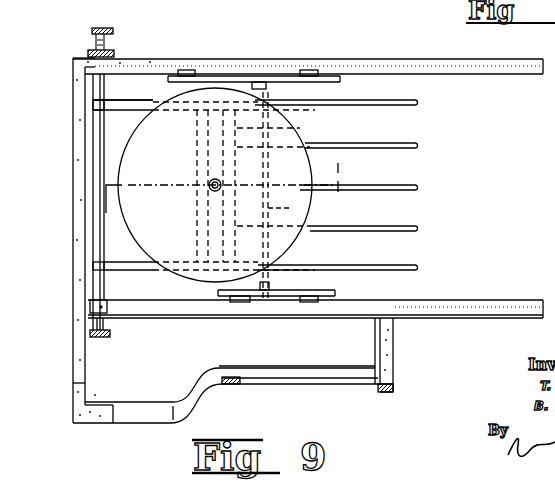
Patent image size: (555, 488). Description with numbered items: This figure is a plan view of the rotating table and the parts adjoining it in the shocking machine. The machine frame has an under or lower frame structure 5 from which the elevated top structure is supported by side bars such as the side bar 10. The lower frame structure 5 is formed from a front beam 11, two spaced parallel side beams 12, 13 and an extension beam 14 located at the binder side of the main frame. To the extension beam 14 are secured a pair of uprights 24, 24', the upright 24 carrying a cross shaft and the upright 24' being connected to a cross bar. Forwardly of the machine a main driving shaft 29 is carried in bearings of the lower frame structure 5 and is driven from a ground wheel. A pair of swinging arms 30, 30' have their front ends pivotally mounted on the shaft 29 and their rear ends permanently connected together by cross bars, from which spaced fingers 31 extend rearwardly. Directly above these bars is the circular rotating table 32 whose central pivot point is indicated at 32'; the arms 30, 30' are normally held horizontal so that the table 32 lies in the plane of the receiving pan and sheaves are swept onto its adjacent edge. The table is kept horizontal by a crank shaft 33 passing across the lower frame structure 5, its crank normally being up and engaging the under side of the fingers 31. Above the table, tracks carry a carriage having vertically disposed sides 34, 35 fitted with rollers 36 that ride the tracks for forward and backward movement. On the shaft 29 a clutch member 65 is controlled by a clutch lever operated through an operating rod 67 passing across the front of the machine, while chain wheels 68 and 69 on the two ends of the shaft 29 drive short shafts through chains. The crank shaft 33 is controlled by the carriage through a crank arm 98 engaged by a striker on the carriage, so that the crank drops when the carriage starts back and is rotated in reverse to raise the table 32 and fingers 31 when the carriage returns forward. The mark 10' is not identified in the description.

The lower frame structure 5 is at (432, 303).
The side bar 10 is at (220, 199).
The stop mark 10' is at (351, 177).
The front beam 11 is at (80, 258).
The side beam 12 is at (432, 60).
The side beam 13 is at (170, 312).
The extension beam 14 is at (318, 384).
The upright 24 is at (211, 364).
The upright 24' is at (397, 406).
The main driving shaft 29 is at (92, 184).
The swinging arm 30 is at (204, 275).
The swinging arm 30' is at (204, 154).
The spaced fingers 31 is at (418, 146).
The circular rotating table 32 is at (177, 185).
The central pivot point 32' is at (185, 177).
The crank shaft 33 is at (253, 196).
The carriage side 34 is at (232, 76).
The carriage side 35 is at (280, 297).
The rollers 36 is at (186, 70).
The clutch member 65 is at (97, 46).
The operating rod 67 is at (113, 30).
The chain wheel 68 is at (113, 52).
The chain wheel 69 is at (100, 337).
The crank arm 98 is at (256, 86).